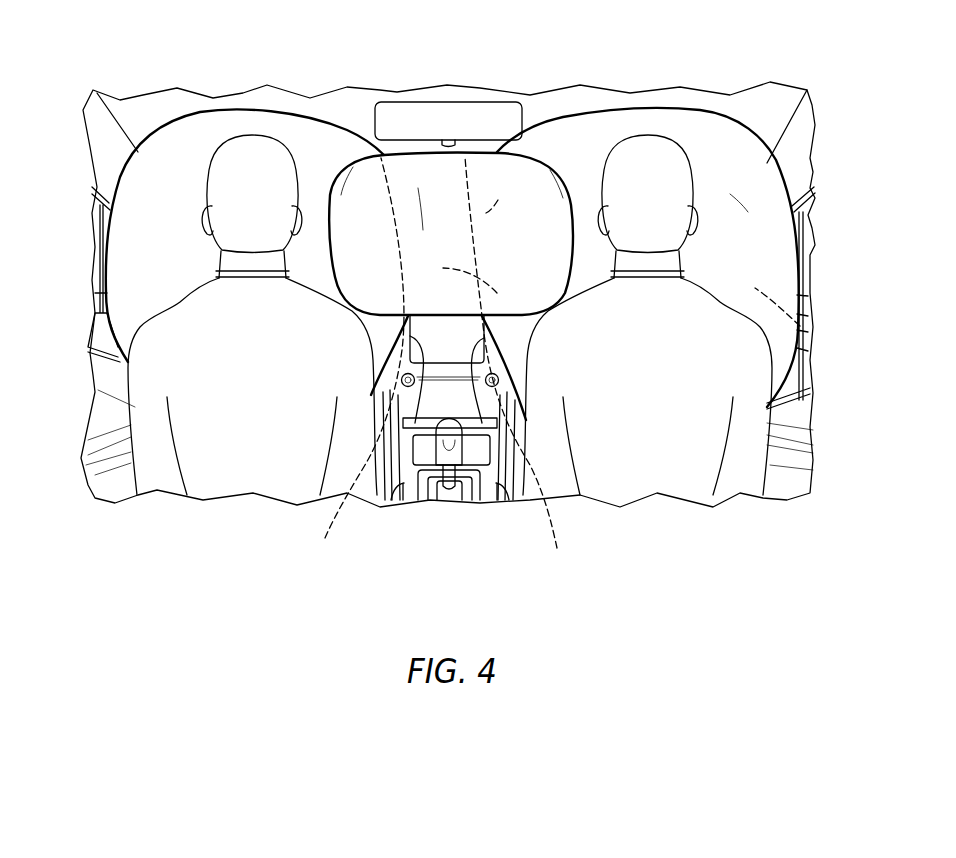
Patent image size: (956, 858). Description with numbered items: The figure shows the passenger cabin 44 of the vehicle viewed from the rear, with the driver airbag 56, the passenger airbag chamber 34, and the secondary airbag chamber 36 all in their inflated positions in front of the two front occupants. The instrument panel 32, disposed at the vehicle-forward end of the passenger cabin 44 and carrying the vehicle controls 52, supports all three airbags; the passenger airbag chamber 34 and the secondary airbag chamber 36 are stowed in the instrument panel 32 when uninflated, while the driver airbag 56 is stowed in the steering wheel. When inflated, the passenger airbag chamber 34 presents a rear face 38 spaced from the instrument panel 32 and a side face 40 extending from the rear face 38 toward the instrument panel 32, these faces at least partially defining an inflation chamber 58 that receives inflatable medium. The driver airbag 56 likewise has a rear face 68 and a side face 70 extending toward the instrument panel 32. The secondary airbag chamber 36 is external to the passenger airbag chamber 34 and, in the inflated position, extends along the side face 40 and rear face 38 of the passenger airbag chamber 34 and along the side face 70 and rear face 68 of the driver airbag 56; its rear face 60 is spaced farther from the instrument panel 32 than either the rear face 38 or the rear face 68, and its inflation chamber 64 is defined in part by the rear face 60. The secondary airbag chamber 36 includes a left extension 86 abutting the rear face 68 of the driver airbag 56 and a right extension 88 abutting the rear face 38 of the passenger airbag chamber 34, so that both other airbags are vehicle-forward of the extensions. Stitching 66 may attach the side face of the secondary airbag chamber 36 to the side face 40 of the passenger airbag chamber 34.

The instrument panel 32 is at (384, 485).
The passenger airbag chamber 34 is at (672, 108).
The secondary airbag chamber 36 is at (462, 153).
The rear face 38 is at (730, 194).
The side face 40 is at (518, 365).
The passenger cabin 44 is at (814, 268).
The vehicle controls 52 is at (475, 478).
The driver airbag 56 is at (247, 108).
The inflation chamber 58 is at (800, 326).
The rear face 60 is at (418, 188).
The inflation chamber 64 is at (497, 293).
The stitching 66 is at (498, 200).
The rear face 68 is at (138, 258).
The side face 70 is at (358, 362).
The left extension 86 is at (353, 167).
The right extension 88 is at (550, 170).